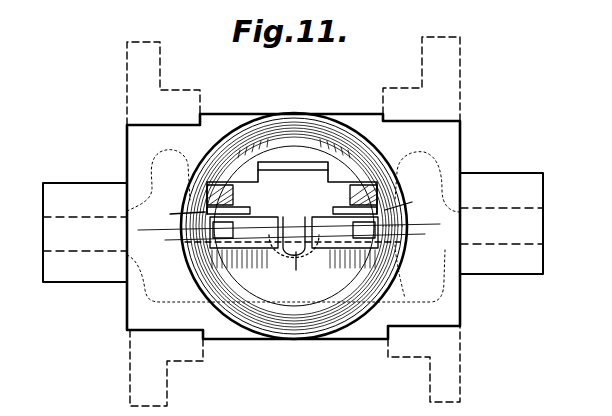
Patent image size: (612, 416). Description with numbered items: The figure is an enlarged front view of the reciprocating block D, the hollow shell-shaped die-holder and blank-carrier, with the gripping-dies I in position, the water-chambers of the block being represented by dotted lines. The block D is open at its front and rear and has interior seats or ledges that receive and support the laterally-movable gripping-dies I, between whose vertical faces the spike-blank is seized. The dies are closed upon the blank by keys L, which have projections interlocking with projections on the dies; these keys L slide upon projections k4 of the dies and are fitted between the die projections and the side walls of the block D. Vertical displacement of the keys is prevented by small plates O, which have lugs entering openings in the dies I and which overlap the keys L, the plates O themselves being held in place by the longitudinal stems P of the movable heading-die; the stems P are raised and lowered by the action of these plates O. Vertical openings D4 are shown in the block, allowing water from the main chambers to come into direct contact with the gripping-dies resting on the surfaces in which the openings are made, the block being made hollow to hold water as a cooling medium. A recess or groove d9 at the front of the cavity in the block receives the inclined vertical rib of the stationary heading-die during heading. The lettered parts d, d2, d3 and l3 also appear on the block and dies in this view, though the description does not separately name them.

The reciprocating block D is at (128, 326).
The duct d is at (293, 216).
The casing flange d2 is at (297, 227).
The casing extension d3 is at (290, 221).
The recess or groove d9 is at (300, 271).
The vertical openings D4 is at (262, 252).
The small plates O is at (286, 208).
The keys L is at (286, 220).
The projections k4 is at (293, 238).
The longitudinal stems P is at (352, 186).
The gripping-dies I is at (258, 222).
The pin l3 is at (294, 237).